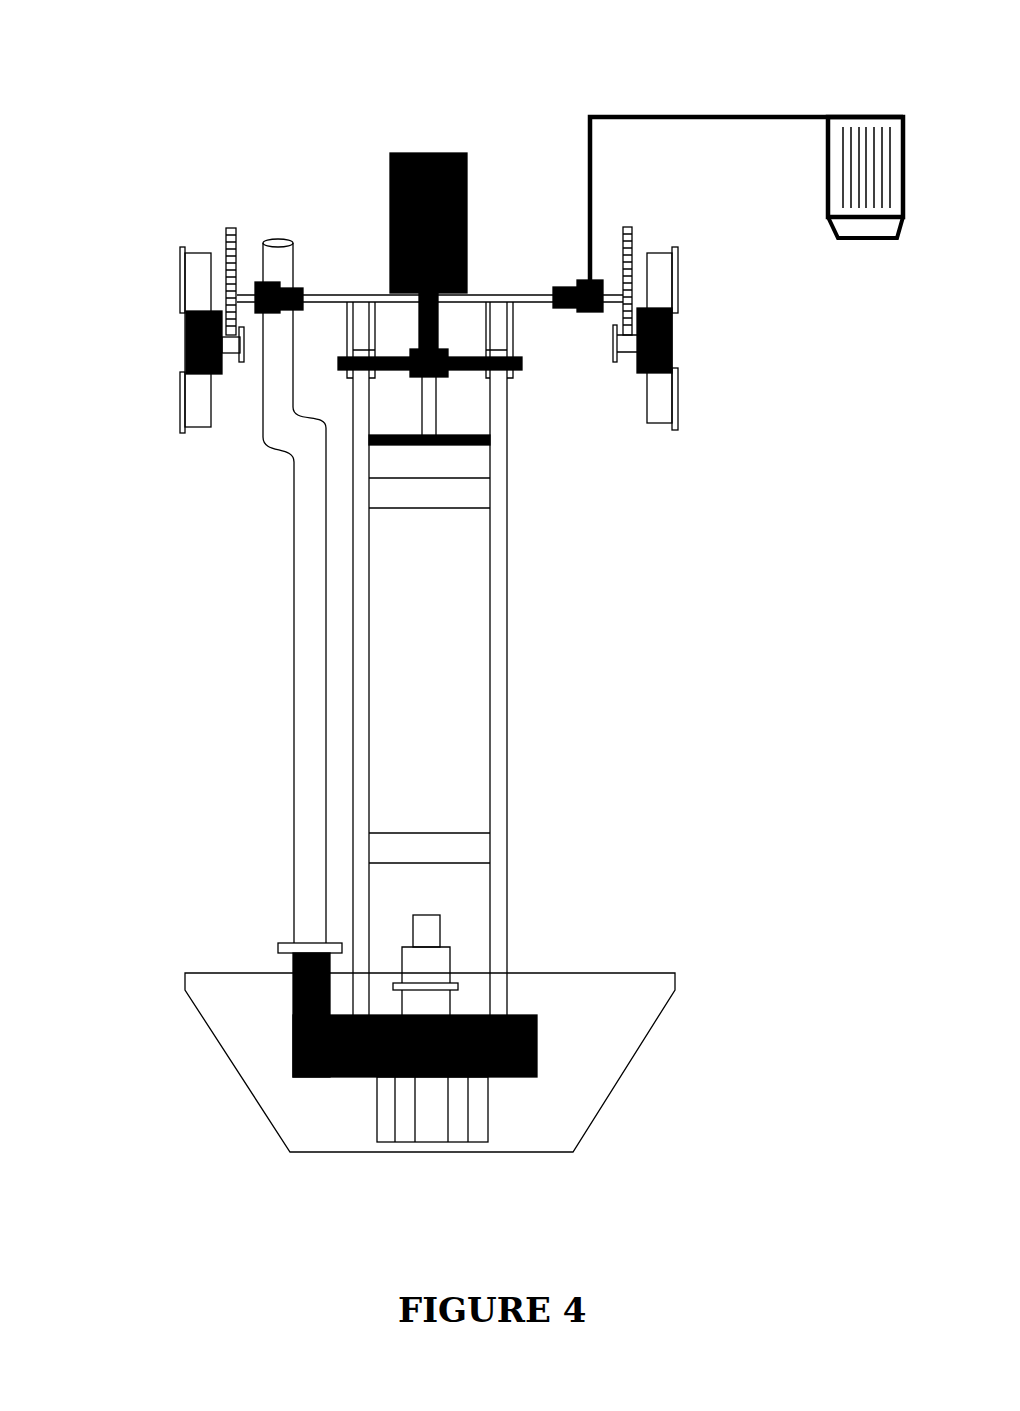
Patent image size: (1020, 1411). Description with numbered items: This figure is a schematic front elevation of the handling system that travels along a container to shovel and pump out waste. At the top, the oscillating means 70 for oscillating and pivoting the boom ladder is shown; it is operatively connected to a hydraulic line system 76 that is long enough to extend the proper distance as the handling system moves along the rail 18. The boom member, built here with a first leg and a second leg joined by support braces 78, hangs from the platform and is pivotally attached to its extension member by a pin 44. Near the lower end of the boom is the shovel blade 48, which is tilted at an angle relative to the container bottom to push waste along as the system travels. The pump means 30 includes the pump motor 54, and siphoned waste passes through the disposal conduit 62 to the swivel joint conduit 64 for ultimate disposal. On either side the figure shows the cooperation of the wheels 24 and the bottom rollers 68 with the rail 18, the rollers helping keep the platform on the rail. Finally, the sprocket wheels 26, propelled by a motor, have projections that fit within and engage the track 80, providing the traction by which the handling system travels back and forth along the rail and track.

The rails 18 is at (187, 343).
The wheels 24 is at (197, 280).
The sprocket wheels 26 is at (628, 225).
The pump means 30 is at (316, 1078).
The pin 44 is at (460, 368).
The shovel blade 48 is at (597, 1063).
The pump motor 54 is at (423, 940).
The disposal conduit 62 is at (307, 705).
The swivel joint conduit 64 is at (283, 260).
The bottom rollers 68 is at (198, 423).
The oscillating means 70 is at (468, 123).
The hydraulic line system 76 is at (762, 113).
The support braces 78 is at (418, 487).
The track 80 is at (239, 363).